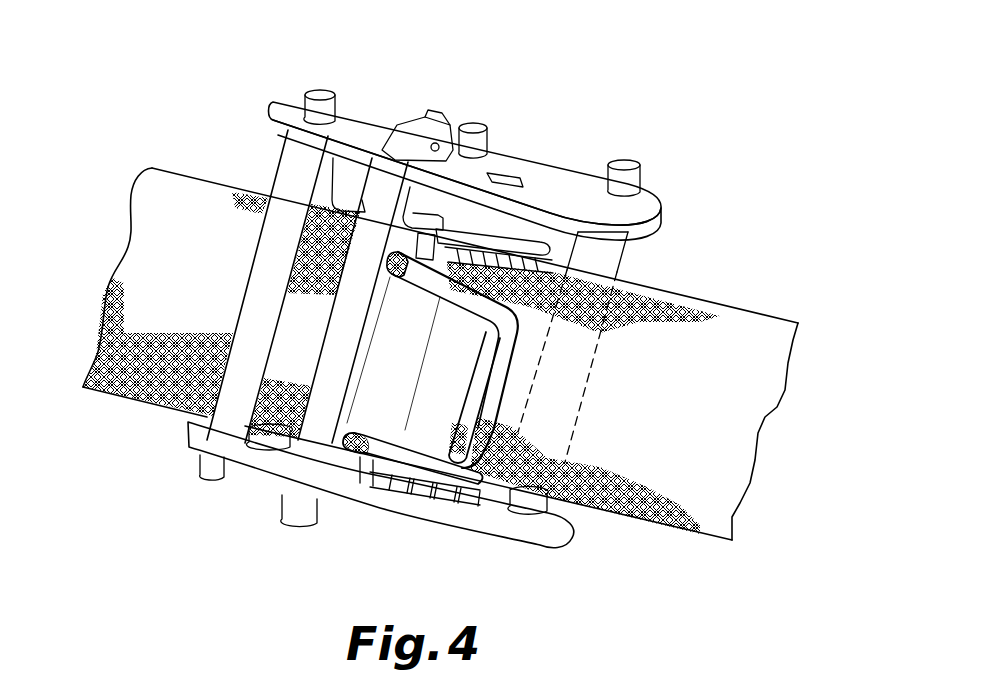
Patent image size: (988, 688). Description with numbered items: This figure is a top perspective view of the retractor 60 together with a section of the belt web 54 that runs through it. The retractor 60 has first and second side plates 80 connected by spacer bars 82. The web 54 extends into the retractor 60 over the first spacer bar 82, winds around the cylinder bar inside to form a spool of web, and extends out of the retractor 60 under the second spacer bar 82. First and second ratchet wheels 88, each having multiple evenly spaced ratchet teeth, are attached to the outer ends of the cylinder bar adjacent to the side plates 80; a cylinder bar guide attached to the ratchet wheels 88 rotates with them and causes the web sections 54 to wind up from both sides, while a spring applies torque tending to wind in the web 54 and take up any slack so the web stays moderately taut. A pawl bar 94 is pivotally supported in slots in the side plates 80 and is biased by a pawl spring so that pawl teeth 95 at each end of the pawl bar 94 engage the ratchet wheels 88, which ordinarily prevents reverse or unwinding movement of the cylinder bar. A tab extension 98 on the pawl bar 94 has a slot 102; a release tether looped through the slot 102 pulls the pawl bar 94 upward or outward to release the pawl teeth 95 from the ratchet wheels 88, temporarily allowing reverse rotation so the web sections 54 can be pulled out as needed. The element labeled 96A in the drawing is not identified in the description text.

The web 54 is at (733, 341).
The retractor 60 is at (398, 297).
The side plates 80 is at (473, 247).
The spacer bars 82 is at (203, 417).
The ratchet wheels 88 is at (525, 235).
The pawl bar 94 is at (252, 442).
The pawl teeth 95 is at (360, 480).
The collar 96A is at (548, 210).
The tab extension 98 is at (443, 373).
The slot 102 is at (540, 283).